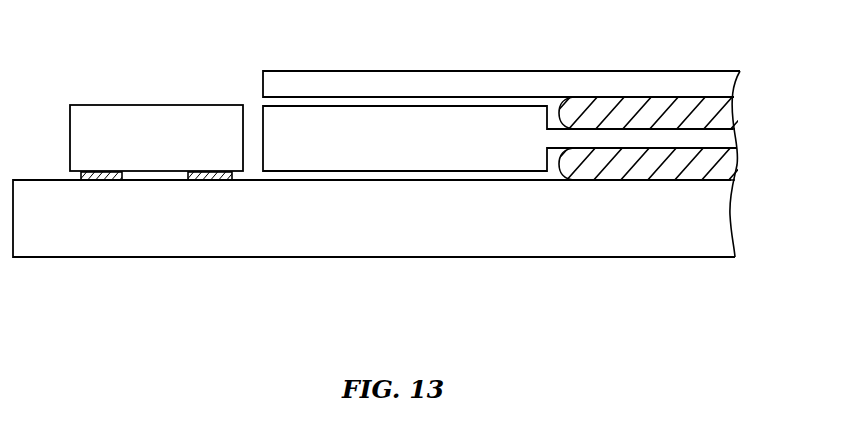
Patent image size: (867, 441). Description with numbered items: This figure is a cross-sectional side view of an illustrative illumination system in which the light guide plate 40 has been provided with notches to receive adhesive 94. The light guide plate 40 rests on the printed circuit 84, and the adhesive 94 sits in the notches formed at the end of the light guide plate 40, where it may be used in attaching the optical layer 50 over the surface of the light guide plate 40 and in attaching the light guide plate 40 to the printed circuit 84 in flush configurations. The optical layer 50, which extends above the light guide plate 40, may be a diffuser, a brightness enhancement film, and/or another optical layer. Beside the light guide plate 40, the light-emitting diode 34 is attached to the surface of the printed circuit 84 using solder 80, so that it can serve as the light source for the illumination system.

The light-emitting diode 34 is at (82, 132).
The light guide plate 40 is at (345, 158).
The optical layer 50 is at (473, 82).
The solder 80 is at (122, 181).
The printed circuit 84 is at (530, 240).
The adhesive 94 is at (722, 113).